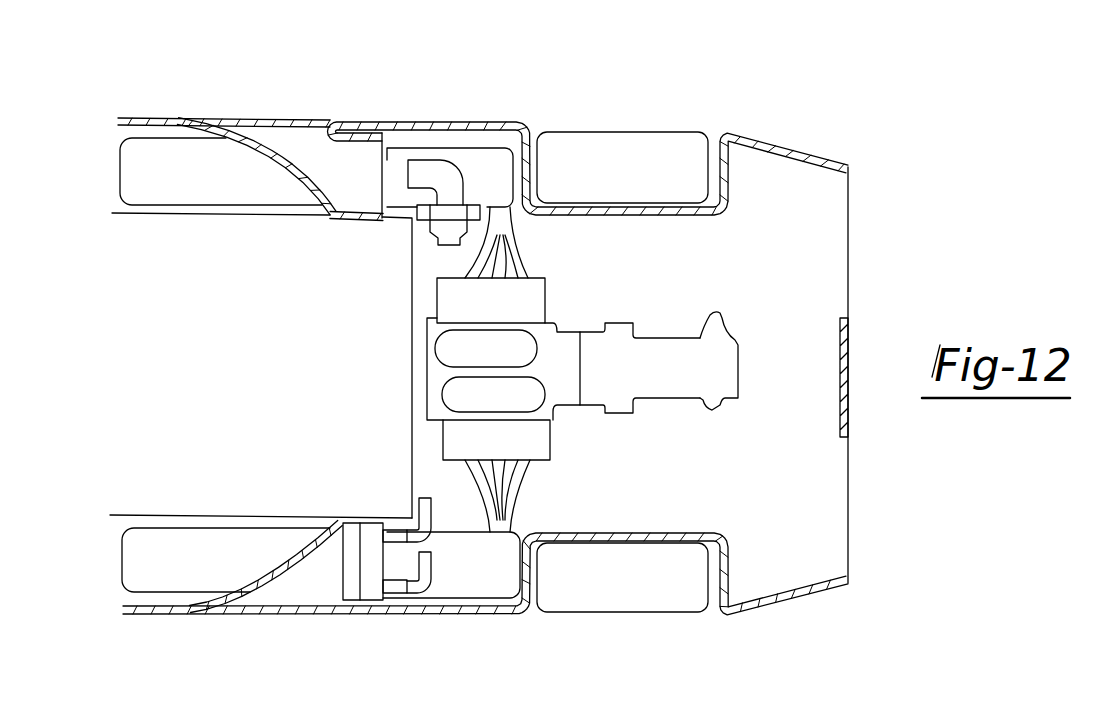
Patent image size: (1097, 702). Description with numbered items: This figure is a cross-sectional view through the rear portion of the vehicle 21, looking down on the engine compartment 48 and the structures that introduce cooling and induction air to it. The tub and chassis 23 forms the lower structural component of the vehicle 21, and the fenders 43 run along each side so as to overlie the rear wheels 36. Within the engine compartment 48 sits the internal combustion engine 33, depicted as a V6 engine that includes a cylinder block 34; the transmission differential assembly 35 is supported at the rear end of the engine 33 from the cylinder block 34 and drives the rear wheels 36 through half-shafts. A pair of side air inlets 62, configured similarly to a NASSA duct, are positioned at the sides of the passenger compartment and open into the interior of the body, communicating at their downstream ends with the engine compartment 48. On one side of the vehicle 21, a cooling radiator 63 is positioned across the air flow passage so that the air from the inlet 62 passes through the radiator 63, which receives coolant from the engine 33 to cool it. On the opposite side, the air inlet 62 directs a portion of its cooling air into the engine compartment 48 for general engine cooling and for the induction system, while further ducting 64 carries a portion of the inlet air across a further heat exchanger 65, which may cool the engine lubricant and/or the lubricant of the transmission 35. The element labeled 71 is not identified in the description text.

The vehicle 21 is at (316, 100).
The tub and chassis 23 is at (108, 522).
The internal combustion engine 33 is at (658, 315).
The cylinder block 34 is at (558, 345).
The transmission differential assembly 35 is at (716, 352).
The rear wheels 36 is at (620, 148).
The fenders 43 is at (164, 118).
The engine compartment 48 is at (603, 460).
The side air inlets 62 is at (270, 150).
The cooling radiator 63 is at (336, 576).
The ducting 64 is at (443, 162).
The heat exchanger 65 is at (437, 208).
The wire bundle 71 is at (525, 258).